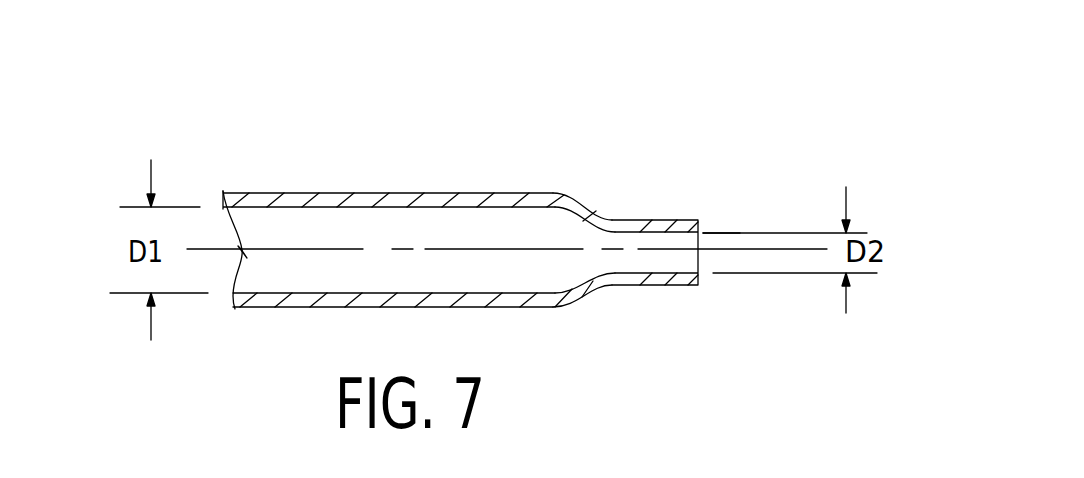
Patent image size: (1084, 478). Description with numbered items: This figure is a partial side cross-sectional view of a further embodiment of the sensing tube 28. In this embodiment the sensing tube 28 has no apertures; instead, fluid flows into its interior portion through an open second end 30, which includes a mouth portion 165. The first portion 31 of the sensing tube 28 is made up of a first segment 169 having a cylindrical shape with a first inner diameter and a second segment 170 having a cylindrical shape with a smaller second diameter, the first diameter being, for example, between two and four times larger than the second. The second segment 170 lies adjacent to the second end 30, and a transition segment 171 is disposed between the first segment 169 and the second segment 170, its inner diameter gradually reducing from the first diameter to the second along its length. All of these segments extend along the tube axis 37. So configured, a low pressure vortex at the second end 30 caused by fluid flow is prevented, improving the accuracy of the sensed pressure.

The sensing tube 28 is at (634, 171).
The open second end 30 is at (674, 296).
The first portion 31 is at (393, 184).
The tube axis 37 is at (790, 267).
The mouth portion 165 is at (716, 233).
The first segment 169 is at (278, 193).
The second segment 170 is at (637, 215).
The transition segment 171 is at (600, 208).